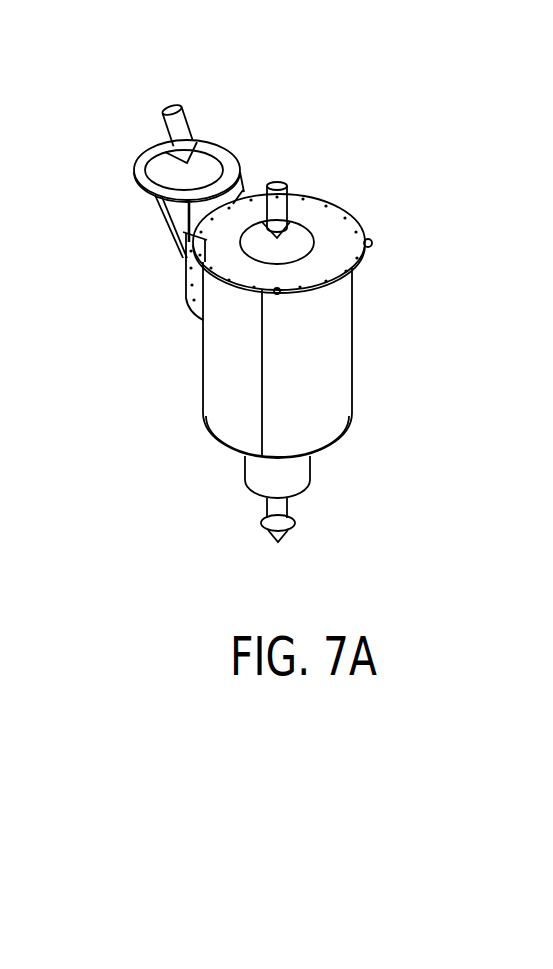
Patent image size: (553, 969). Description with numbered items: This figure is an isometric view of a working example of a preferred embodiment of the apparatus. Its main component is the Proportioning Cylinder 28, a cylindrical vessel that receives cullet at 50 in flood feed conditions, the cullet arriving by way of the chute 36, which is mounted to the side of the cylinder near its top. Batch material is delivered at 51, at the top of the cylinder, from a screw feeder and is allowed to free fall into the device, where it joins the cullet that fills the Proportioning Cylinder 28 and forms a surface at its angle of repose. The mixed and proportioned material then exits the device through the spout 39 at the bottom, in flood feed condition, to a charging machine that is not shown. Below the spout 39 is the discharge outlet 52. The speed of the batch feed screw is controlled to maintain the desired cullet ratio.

The Proportioning Cylinder 28 is at (340, 353).
The chute 36 is at (168, 226).
The spout 39 is at (310, 483).
The cullet receiving location 50 is at (181, 107).
The batch delivery location 51 is at (289, 198).
The nozzle 52 is at (267, 533).